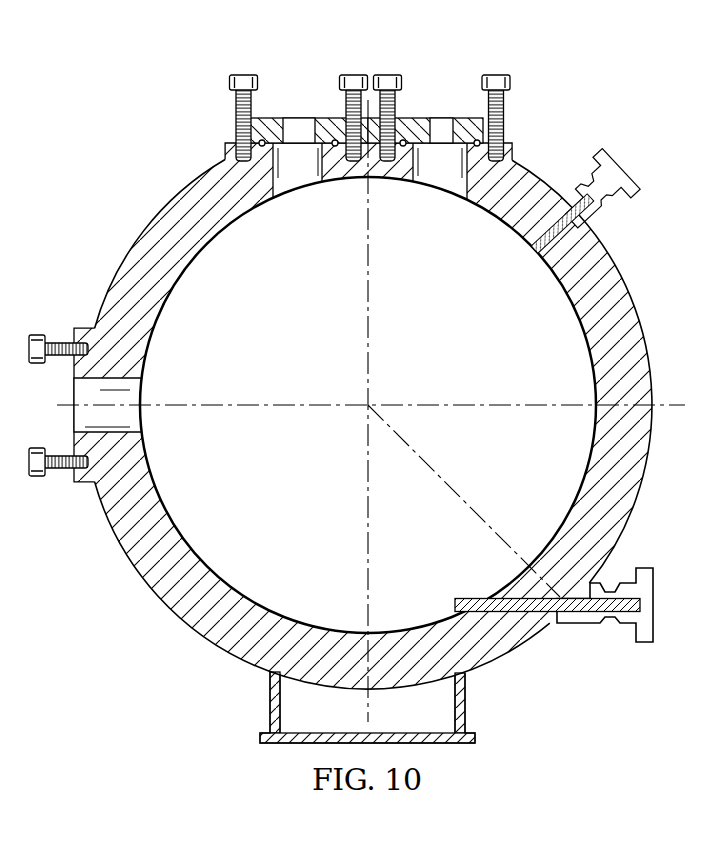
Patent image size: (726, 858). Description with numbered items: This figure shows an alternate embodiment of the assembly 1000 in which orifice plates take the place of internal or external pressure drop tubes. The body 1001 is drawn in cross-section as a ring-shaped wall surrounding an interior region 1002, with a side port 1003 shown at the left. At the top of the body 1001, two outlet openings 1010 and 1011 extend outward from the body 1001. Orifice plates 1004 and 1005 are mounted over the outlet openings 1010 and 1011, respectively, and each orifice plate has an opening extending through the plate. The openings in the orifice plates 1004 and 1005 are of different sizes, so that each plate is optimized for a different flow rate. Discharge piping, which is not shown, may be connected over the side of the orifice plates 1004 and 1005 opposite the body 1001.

The pressure vessel assembly 1000 is at (136, 62).
The body 1001 is at (135, 243).
The interior chamber 1002 is at (320, 542).
The side port flange 1003 is at (79, 394).
The orifice plate 1004 is at (297, 114).
The orifice plate 1005 is at (439, 114).
The outlet opening 1010 is at (290, 156).
The outlet opening 1011 is at (447, 156).